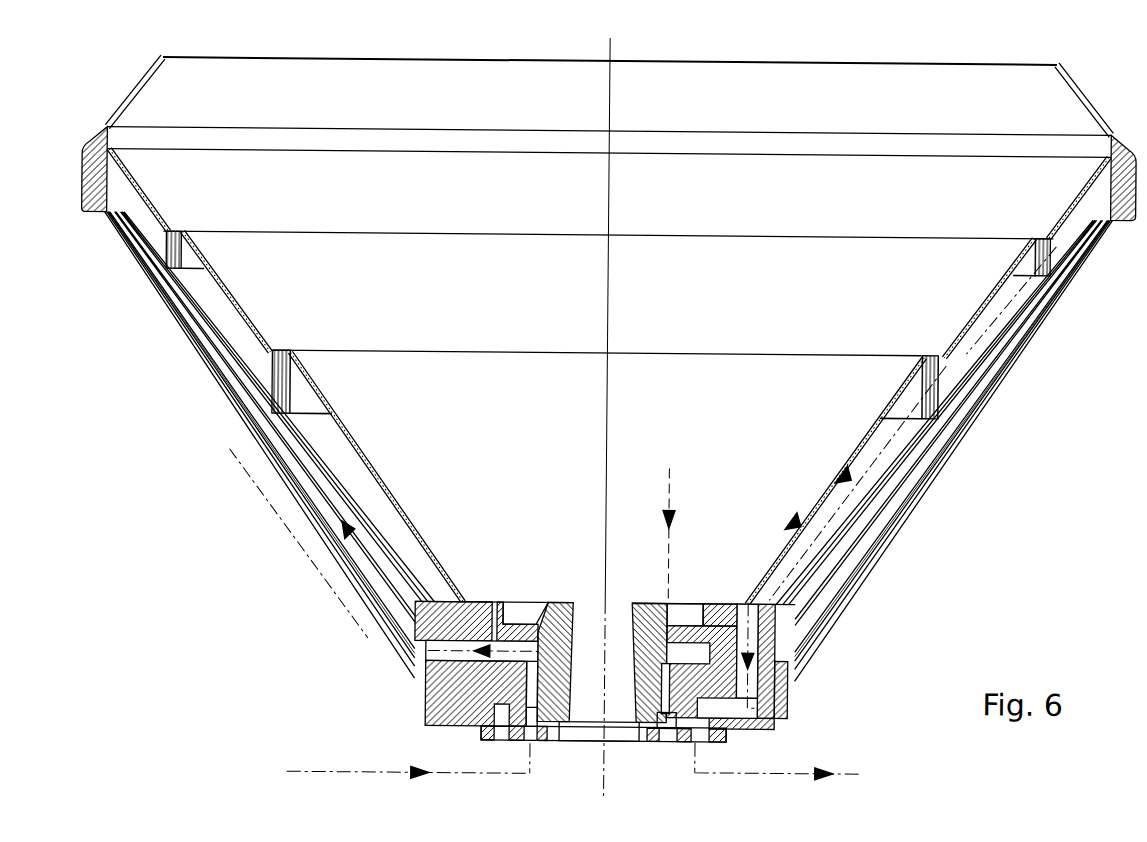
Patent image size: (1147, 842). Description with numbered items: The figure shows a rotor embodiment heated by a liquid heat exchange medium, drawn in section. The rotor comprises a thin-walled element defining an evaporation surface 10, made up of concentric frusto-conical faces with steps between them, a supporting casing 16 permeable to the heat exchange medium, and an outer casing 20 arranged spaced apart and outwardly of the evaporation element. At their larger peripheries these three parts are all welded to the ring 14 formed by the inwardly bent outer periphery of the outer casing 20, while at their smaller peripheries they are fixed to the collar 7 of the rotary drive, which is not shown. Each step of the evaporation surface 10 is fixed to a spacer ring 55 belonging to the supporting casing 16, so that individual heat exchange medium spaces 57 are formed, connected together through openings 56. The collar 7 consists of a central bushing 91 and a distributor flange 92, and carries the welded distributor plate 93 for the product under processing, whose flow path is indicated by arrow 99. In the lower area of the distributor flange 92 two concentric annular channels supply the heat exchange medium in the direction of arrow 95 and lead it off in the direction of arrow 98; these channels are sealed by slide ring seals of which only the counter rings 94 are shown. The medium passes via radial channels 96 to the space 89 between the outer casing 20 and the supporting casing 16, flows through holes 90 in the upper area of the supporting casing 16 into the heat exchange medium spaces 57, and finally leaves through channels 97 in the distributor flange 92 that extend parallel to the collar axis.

The collar 7 is at (497, 754).
The evaporation surface 10 is at (364, 458).
The ring 14 is at (85, 221).
The supporting casing 16 is at (335, 507).
The outer casing 20 is at (208, 366).
The spacer ring 55 is at (1036, 246).
The openings 56 is at (1047, 270).
The heat exchange medium spaces 57 is at (1058, 234).
The space 89 is at (288, 459).
The holes 90 is at (1104, 183).
The central bushing 91 is at (555, 603).
The distributor flange 92 is at (473, 625).
The distributor plate 93 is at (510, 604).
The counter rings 94 is at (710, 742).
The arrow 95 is at (406, 760).
The radial channels 96 is at (527, 697).
The channels 97 is at (775, 708).
The outlet flow 98 is at (778, 761).
The arrow 99 is at (671, 521).